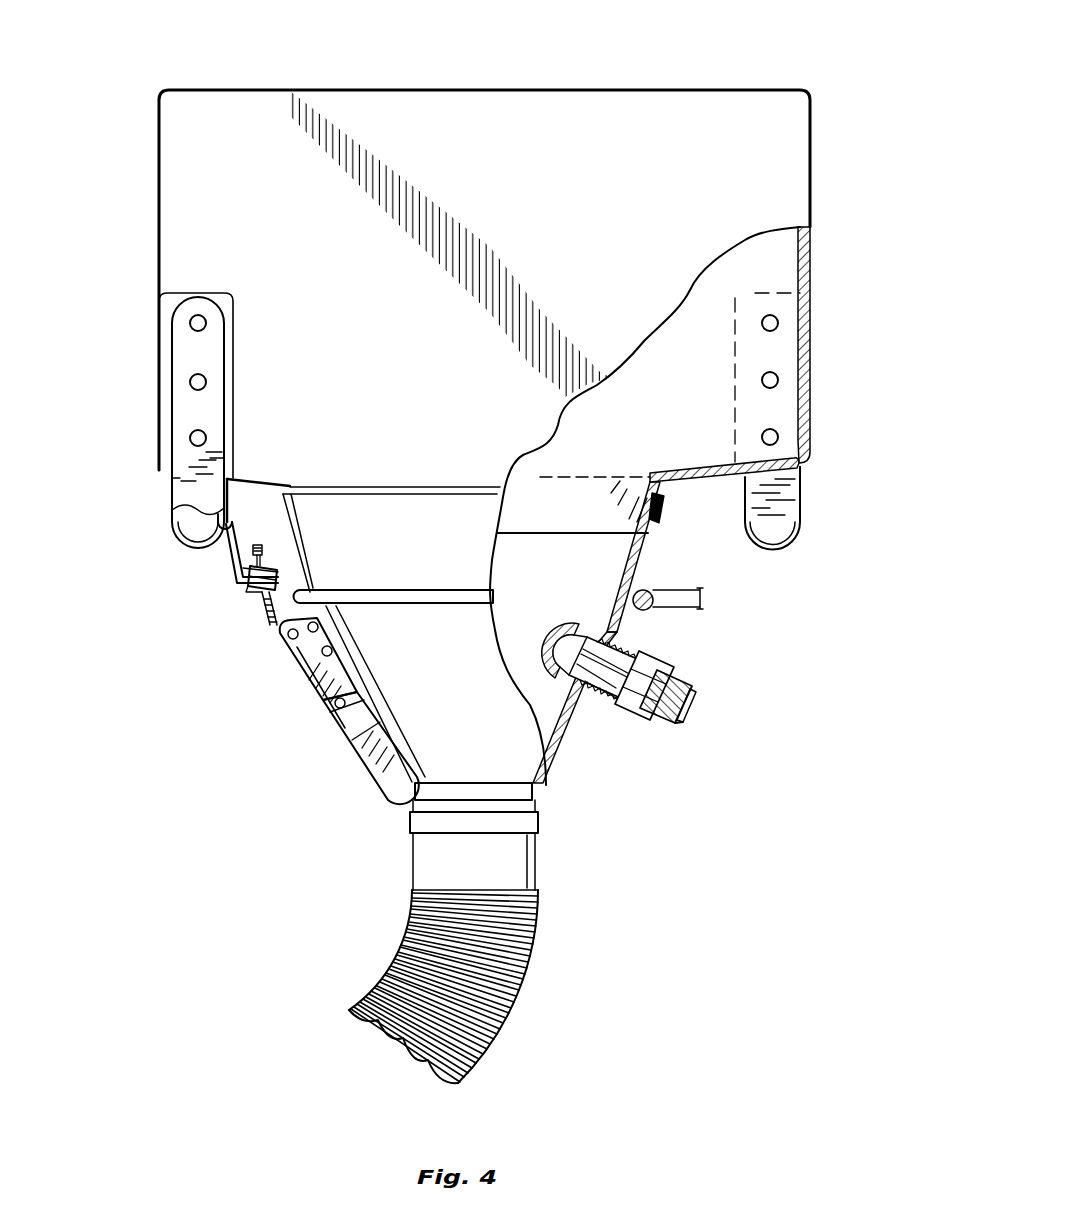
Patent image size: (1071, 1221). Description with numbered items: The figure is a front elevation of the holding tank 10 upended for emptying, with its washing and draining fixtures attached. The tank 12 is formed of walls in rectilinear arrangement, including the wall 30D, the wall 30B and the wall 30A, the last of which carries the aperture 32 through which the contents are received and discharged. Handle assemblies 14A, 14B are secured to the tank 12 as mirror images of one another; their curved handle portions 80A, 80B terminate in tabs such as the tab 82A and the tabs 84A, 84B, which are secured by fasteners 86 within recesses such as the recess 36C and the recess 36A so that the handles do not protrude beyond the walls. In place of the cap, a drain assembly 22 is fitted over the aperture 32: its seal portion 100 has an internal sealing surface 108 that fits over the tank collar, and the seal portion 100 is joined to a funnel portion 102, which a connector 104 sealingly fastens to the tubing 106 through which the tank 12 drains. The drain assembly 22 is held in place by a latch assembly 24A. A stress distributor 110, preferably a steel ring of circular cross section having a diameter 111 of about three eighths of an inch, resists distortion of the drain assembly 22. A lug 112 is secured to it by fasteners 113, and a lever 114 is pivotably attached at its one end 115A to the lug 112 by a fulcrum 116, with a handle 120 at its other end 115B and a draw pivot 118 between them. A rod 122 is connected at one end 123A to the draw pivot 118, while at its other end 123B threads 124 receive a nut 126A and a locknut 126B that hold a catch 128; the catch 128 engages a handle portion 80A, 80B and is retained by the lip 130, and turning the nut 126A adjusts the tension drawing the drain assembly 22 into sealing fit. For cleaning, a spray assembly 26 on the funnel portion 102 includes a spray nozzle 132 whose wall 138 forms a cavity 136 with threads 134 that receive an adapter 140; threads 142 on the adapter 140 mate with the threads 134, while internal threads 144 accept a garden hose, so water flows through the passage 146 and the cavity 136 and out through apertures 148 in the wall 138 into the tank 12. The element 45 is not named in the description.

The holding tank 10 is at (492, 549).
The tank 12 is at (785, 157).
The wall 30D is at (527, 100).
The wall 30B is at (815, 255).
The wall 30A is at (730, 470).
The recess 36C is at (173, 303).
The recess 36A is at (800, 304).
The tab 82A is at (193, 362).
The fasteners 86 is at (190, 437).
The handle assembly 14A is at (162, 474).
The handle assembly 14B is at (800, 490).
The tab 84A is at (188, 518).
The tab 84B is at (783, 517).
The handle portion 80A is at (178, 546).
The handle portion 80B is at (797, 540).
The lip 130 is at (212, 534).
The catch 128 is at (243, 566).
The rod 122 is at (263, 607).
The threads 124 is at (265, 550).
The nut 126A is at (280, 578).
The locknut 126B is at (262, 592).
The one end of rod 123A is at (334, 706).
The other end of rod 123B is at (272, 545).
The lug 112 is at (318, 690).
The fasteners 113 is at (343, 647).
The lever 114 is at (330, 730).
The one end of lever 115A is at (292, 668).
The other end of lever 115B is at (343, 742).
The fulcrum 116 is at (285, 650).
The draw pivot 118 is at (340, 748).
The handle 120 is at (393, 783).
The latch assembly 24A is at (328, 742).
The stress distributor 110 is at (430, 596).
The drain assembly 22 is at (561, 788).
The aperture 32 is at (603, 470).
The wall 45 is at (660, 532).
The sealing surface 108 is at (670, 511).
The seal portion 100 is at (655, 585).
The funnel portion 102 is at (634, 632).
The diameter 111 is at (705, 600).
The connector 104 is at (540, 822).
The tubing 106 is at (538, 915).
The spray assembly 26 is at (708, 712).
The spray nozzle 132 is at (642, 646).
The threads 134 is at (593, 622).
The cavity 136 is at (566, 647).
The wall 138 is at (590, 695).
The adapter 140 is at (667, 743).
The threads 142 is at (600, 695).
The threads 144 is at (682, 735).
The passage 146 is at (693, 690).
The apertures 148 is at (560, 628).